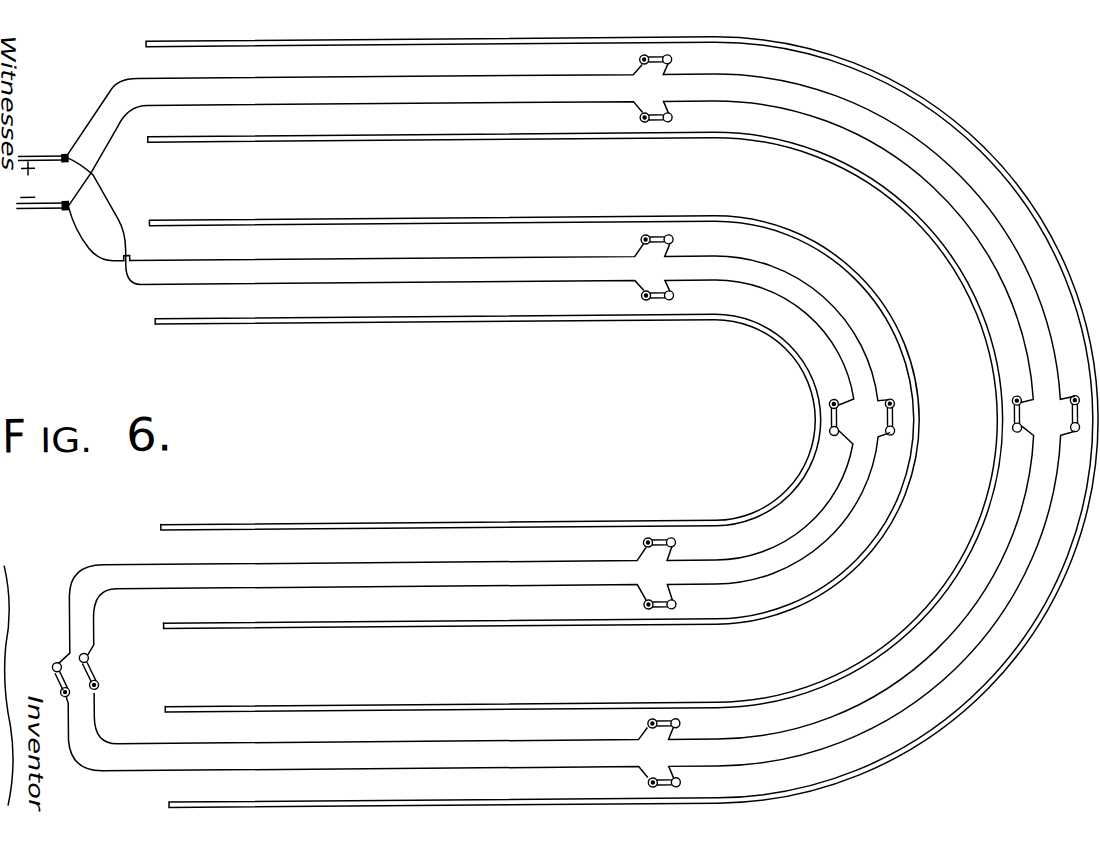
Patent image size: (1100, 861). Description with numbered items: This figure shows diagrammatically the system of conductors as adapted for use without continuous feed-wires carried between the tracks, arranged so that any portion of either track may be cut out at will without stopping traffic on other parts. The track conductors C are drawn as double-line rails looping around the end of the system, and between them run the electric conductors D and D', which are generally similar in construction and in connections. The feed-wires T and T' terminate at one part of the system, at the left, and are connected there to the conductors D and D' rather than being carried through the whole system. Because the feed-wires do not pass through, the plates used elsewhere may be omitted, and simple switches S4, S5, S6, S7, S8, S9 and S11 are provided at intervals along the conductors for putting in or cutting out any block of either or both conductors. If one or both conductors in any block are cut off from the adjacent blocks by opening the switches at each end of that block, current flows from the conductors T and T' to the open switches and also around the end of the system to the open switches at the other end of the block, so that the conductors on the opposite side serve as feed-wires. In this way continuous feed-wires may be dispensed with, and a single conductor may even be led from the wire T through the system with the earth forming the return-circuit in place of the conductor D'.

The track conductor C is at (420, 796).
The conductor D is at (566, 428).
The conductor D' is at (552, 425).
The feed-wire T is at (43, 148).
The feed-wire T' is at (39, 219).
The switch S4 is at (650, 122).
The switch S5 is at (1075, 398).
The switch S6 is at (654, 787).
The switch S7 is at (95, 670).
The switch S8 is at (650, 609).
The switch S9 is at (894, 410).
The switch S11 is at (650, 300).